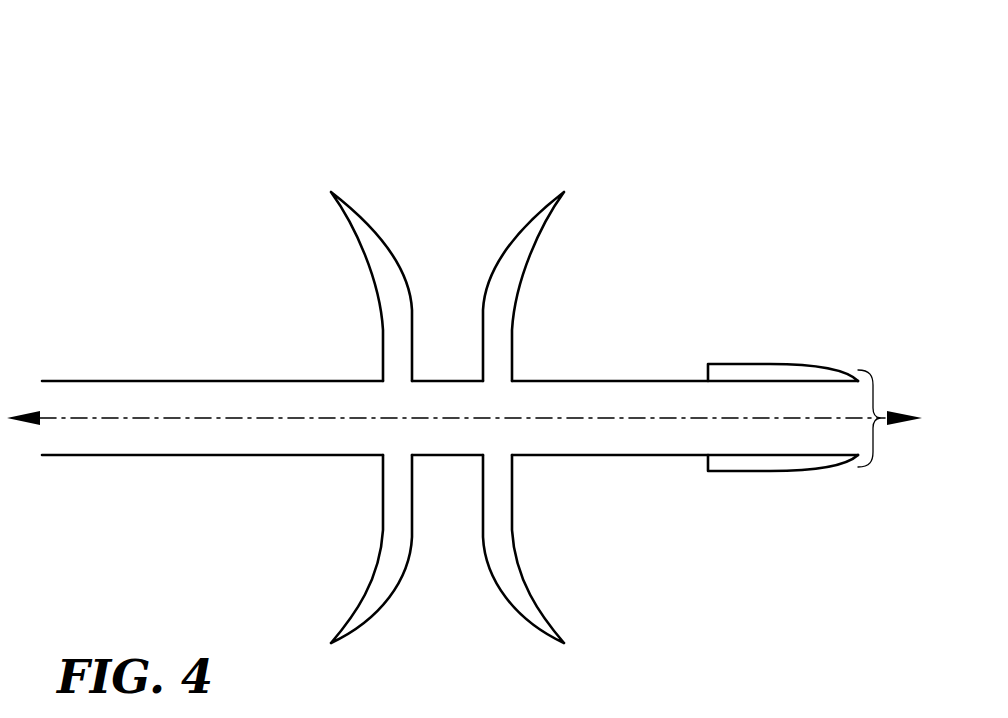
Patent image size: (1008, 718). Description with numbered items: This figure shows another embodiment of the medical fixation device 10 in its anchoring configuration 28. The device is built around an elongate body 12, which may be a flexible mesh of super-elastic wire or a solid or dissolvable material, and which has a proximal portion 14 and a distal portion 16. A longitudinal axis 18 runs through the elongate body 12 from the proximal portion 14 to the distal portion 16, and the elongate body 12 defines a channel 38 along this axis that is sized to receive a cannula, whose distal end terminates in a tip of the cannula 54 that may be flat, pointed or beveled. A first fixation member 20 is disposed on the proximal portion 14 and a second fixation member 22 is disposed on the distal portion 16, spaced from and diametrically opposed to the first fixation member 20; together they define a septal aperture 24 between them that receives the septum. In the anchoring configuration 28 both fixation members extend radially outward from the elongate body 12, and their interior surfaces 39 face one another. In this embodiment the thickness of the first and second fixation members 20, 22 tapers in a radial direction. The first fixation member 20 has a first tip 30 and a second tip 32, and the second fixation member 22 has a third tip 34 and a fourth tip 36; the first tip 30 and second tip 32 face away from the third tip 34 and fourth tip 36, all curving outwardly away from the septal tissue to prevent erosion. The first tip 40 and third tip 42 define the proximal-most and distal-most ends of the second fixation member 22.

The medical fixation device 10 is at (718, 174).
The elongate body 12 is at (22, 113).
The proximal portion 14 is at (42, 340).
The distal portion 16 is at (857, 340).
The longitudinal axis 18 is at (753, 420).
The first fixation member 20 is at (352, 657).
The second fixation member 22 is at (543, 657).
The septal aperture 24 is at (413, 255).
The anchoring configuration 28 is at (567, 157).
The first tip 30 is at (328, 188).
The second tip 32 is at (328, 592).
The third tip 34 is at (567, 188).
The fourth tip 36 is at (567, 592).
The channel 38 is at (856, 398).
The interior surface 39 is at (477, 548).
The first tip 40 is at (350, 180).
The third tip 42 is at (545, 180).
The tip of the cannula 54 is at (880, 428).